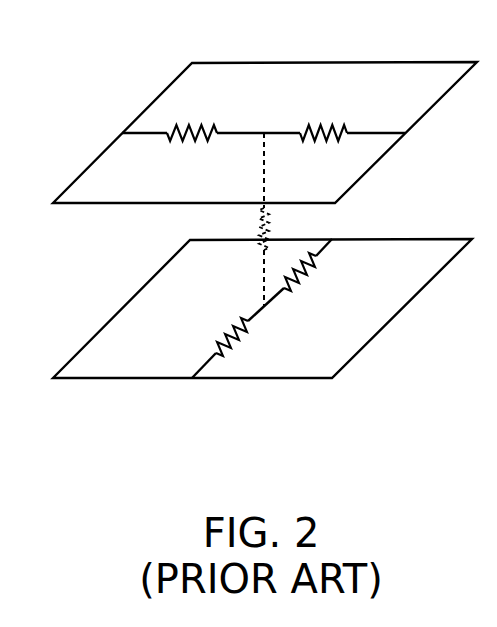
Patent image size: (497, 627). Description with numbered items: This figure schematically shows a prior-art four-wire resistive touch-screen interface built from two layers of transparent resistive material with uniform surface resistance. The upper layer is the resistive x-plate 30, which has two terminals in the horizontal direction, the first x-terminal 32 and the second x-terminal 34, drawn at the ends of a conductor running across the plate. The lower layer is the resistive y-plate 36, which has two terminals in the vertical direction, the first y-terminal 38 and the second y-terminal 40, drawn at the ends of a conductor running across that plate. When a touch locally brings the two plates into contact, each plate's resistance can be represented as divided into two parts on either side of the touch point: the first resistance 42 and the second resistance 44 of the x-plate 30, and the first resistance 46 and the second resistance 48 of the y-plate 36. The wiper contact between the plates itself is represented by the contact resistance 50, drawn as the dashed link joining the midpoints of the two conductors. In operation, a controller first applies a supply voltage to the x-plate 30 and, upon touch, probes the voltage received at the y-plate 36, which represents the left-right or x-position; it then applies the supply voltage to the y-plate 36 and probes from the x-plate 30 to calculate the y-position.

The resistive x-plate 30 is at (406, 73).
The first x-terminal 32 is at (405, 133).
The second x-terminal 34 is at (122, 133).
The resistive y-plate 36 is at (400, 270).
The first y-terminal 38 is at (332, 239).
The second y-terminal 40 is at (192, 380).
The first resistance of the x-plate 42 is at (327, 110).
The second resistance of the x-plate 44 is at (192, 110).
The first resistance of the y-plate 46 is at (308, 279).
The second resistance of the y-plate 48 is at (219, 314).
The contact resistance 50 is at (252, 231).